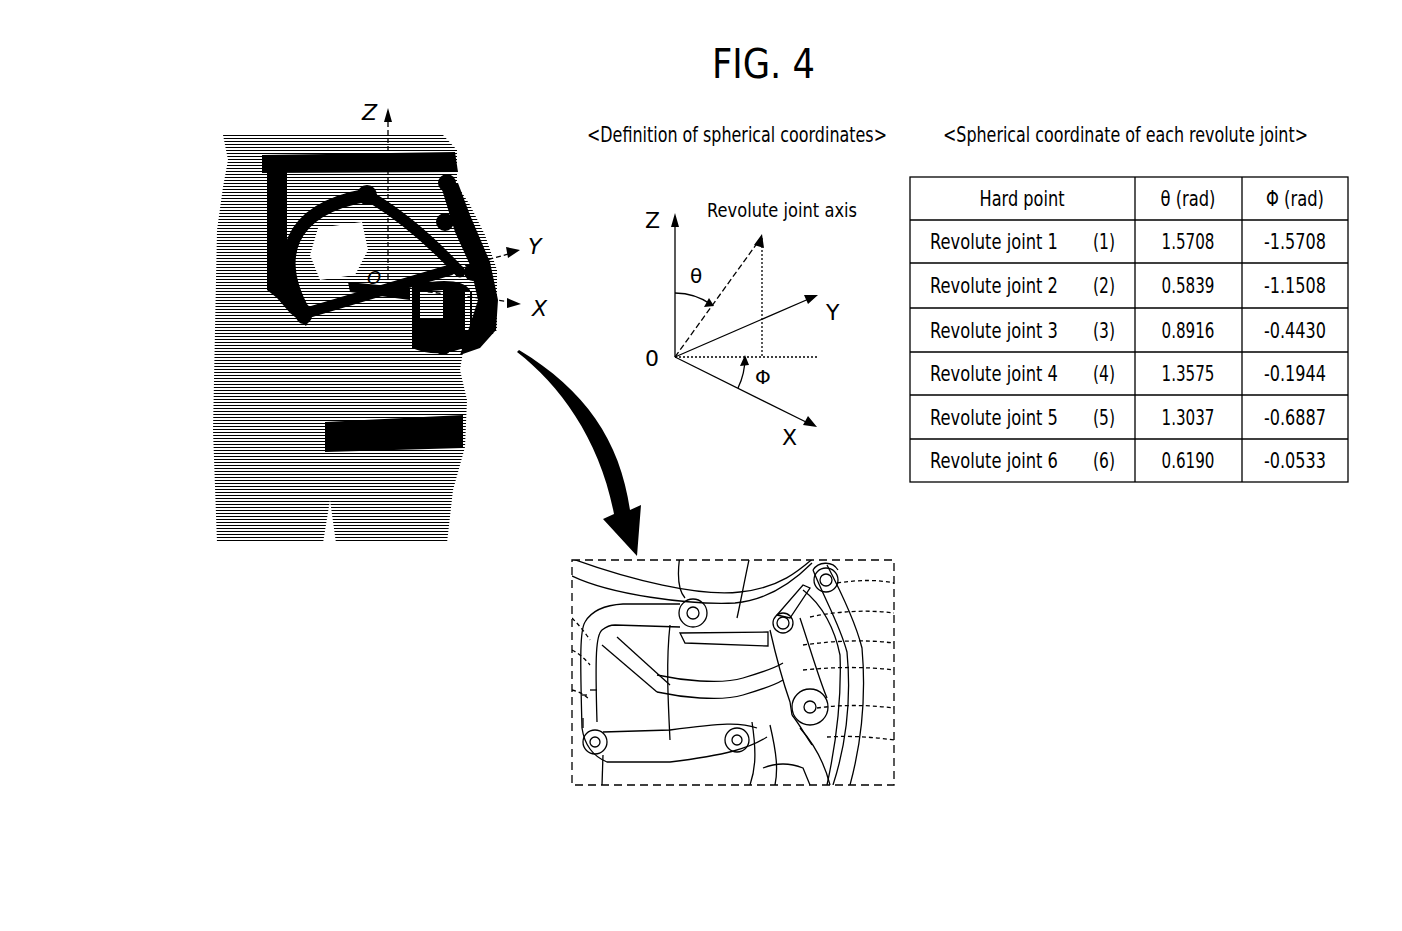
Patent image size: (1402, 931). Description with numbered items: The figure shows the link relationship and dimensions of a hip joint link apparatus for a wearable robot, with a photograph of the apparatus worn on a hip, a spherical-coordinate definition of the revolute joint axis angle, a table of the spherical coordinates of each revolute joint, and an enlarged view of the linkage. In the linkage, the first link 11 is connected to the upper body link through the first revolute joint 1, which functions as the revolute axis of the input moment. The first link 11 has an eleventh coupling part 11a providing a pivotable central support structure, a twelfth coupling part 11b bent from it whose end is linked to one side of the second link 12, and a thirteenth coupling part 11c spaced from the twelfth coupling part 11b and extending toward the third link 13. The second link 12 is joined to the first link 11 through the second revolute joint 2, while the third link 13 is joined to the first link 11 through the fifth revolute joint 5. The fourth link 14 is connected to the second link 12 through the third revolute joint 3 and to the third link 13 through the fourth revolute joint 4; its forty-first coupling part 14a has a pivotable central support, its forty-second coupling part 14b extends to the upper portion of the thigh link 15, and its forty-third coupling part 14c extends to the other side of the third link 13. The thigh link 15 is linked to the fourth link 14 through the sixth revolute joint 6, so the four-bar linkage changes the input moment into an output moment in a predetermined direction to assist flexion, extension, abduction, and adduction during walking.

The first revolute joint 1 is at (307, 316).
The second revolute joint 2 is at (362, 192).
The third revolute joint 3 is at (446, 220).
The fourth revolute joint 4 is at (473, 272).
The fifth revolute joint 5 is at (443, 347).
The sixth revolute joint 6 is at (447, 183).
The first link 11 is at (611, 683).
The eleventh coupling part 11a is at (583, 725).
The twelfth coupling part 11b is at (577, 690).
The thirteenth coupling part 11c is at (587, 693).
The second link 12 is at (737, 615).
The third link 13 is at (773, 730).
The fourth link 14 is at (884, 665).
The forty-first coupling part 14a is at (792, 637).
The forty-second coupling part 14b is at (805, 615).
The forty-third coupling part 14c is at (803, 672).
The thigh link 15 is at (863, 588).